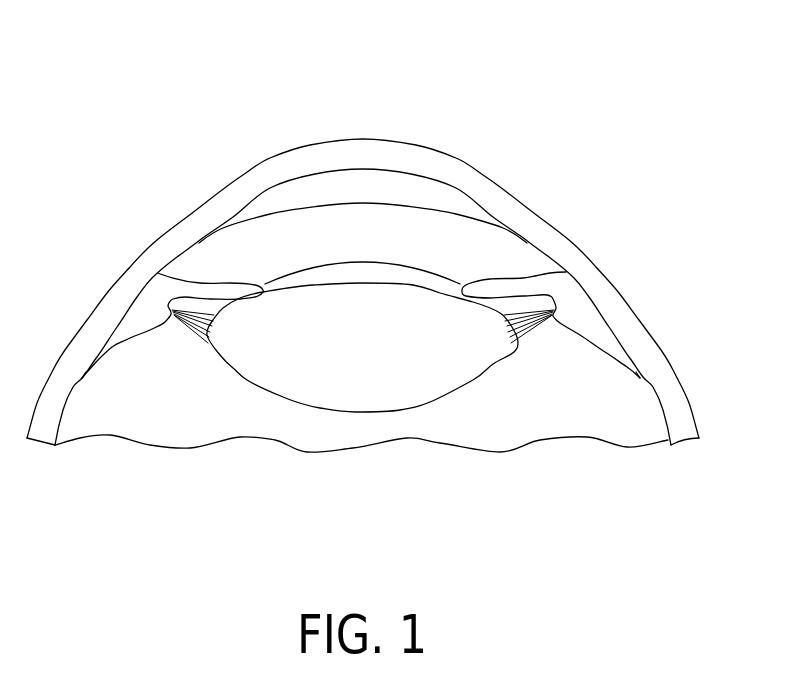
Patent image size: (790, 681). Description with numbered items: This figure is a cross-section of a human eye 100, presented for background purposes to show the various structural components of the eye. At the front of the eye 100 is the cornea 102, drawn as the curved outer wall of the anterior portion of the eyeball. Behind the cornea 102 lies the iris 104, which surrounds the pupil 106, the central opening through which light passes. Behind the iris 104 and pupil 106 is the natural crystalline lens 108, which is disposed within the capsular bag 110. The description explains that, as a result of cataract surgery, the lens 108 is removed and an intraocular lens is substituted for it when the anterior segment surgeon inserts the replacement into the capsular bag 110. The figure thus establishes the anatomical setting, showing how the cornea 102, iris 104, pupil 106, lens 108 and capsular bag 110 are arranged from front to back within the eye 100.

The human eye 100 is at (612, 97).
The cornea 102 is at (378, 137).
The iris 104 is at (432, 237).
The pupil 106 is at (233, 227).
The natural crystalline lens 108 is at (393, 365).
The capsular bag 110 is at (287, 397).